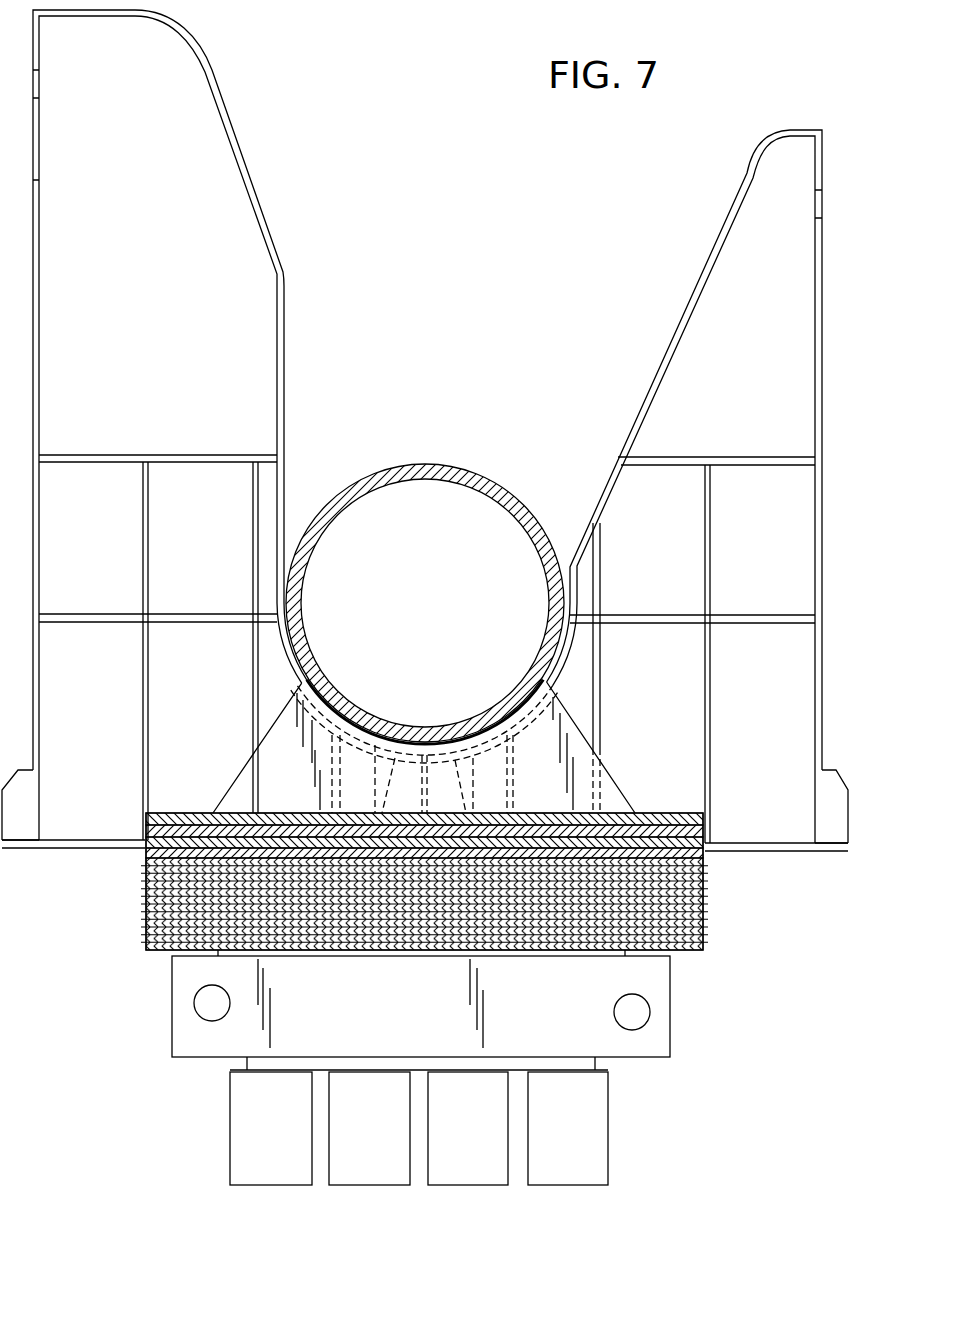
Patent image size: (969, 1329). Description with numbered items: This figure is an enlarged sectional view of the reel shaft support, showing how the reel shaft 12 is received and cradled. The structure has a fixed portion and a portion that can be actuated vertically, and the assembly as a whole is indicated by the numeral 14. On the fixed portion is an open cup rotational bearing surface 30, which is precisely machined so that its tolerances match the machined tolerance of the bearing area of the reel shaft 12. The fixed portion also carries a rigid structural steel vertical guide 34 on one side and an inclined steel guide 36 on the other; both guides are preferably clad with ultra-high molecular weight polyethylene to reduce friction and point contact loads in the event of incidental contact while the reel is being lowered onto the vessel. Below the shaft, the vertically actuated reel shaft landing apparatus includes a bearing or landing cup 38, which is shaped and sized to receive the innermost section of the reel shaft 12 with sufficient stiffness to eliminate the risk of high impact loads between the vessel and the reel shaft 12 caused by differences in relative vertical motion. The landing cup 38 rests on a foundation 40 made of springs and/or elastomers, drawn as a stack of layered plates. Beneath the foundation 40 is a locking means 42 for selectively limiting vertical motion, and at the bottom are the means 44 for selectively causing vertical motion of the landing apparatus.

The reel shaft 12 is at (448, 462).
The pipe support frame 14 is at (322, 212).
The open cup rotational bearing surface 30 is at (483, 740).
The vertical guide 34 is at (285, 408).
The inclined steel guide 36 is at (657, 375).
The bearing cup 38 is at (278, 707).
The foundation 40 is at (740, 896).
The locking means 42 is at (720, 996).
The means for selectively causing vertical motion 44 is at (655, 1127).